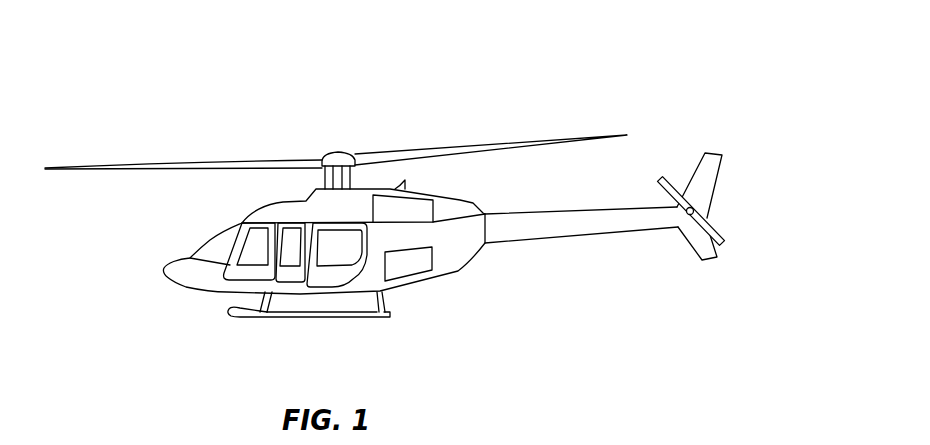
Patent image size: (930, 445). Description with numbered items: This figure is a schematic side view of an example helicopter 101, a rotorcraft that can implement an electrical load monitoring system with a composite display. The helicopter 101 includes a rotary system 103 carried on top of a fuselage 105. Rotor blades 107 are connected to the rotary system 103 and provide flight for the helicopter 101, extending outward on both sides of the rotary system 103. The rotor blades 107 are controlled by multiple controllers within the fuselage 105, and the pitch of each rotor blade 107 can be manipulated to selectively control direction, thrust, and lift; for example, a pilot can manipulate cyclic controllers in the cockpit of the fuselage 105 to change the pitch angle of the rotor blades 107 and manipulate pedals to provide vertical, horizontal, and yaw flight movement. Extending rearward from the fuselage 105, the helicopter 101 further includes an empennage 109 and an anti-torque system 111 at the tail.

The helicopter 101 is at (170, 114).
The rotary system 103 is at (349, 136).
The fuselage 105 is at (215, 292).
The rotor blades 107 is at (573, 141).
The empennage 109 is at (560, 237).
The anti-torque system 111 is at (734, 183).